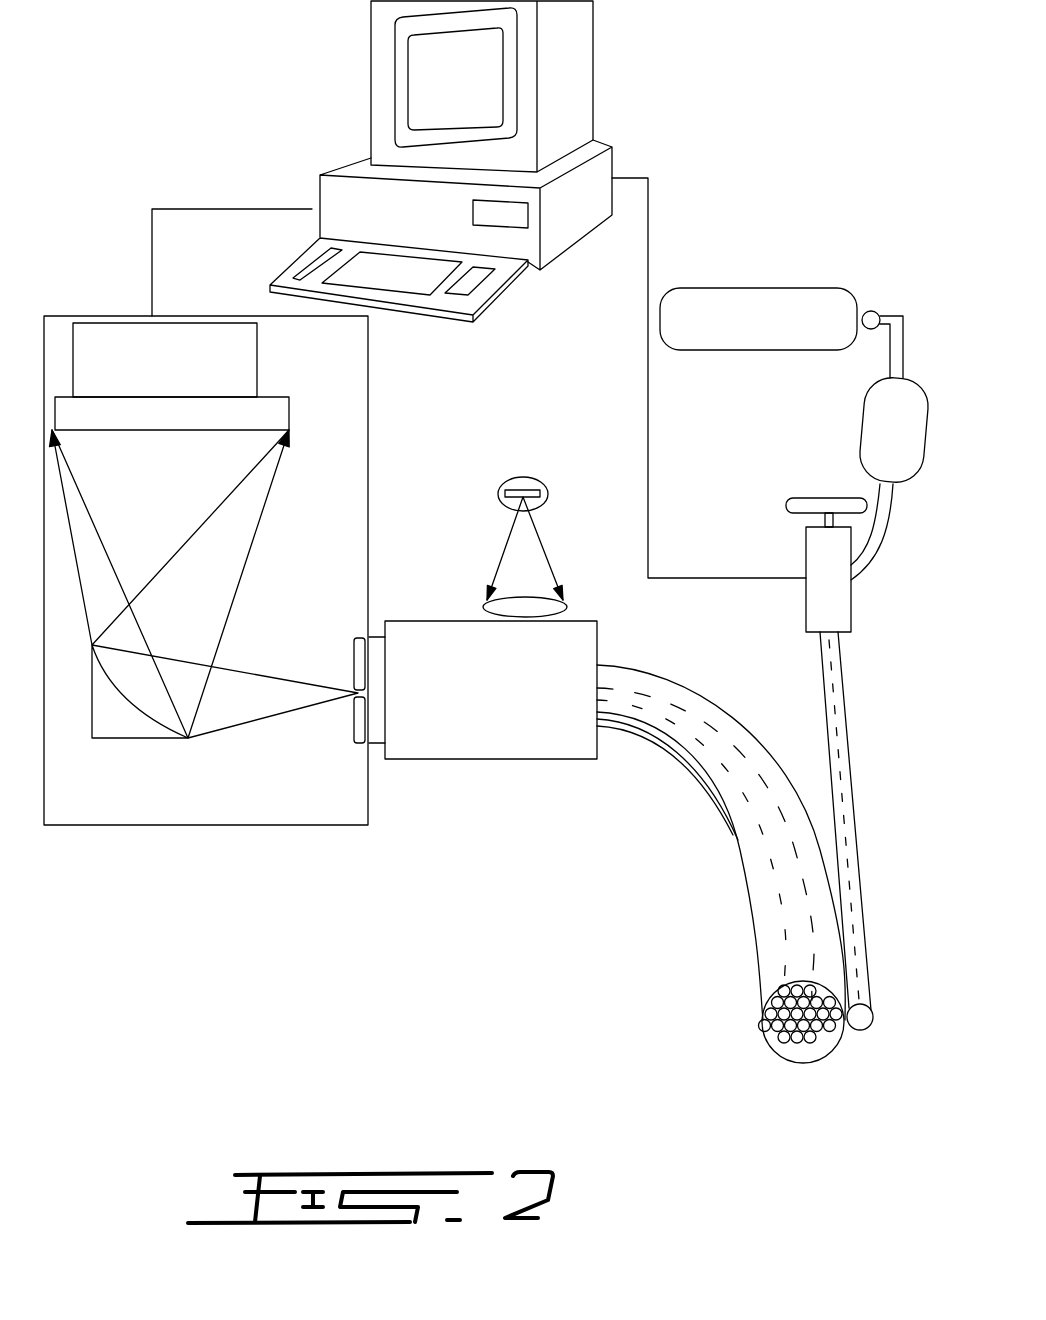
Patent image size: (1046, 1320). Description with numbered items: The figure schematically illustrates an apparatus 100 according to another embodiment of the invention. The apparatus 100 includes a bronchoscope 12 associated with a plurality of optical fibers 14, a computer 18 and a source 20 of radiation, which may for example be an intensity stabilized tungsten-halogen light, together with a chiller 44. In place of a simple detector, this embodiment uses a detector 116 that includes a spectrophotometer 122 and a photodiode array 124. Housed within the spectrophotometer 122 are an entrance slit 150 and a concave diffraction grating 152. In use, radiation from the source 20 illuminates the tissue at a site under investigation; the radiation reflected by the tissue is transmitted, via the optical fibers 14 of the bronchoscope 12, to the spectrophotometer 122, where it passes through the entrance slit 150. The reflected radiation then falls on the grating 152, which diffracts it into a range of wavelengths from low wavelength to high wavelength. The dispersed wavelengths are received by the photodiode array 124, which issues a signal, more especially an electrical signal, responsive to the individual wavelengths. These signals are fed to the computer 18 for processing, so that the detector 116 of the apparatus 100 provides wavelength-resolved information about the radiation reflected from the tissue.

The bronchoscope 12 is at (523, 760).
The optical fibers 14 is at (805, 1040).
The computer 18 is at (593, 38).
The source of radiation 20 is at (535, 477).
The chiller 44 is at (855, 803).
The apparatus 100 is at (444, 856).
The detector 116 is at (129, 830).
The spectrophotometer 122 is at (340, 826).
The photodiode array 124 is at (257, 350).
The entrance slit 150 is at (358, 745).
The concave diffraction grating 152 is at (92, 712).